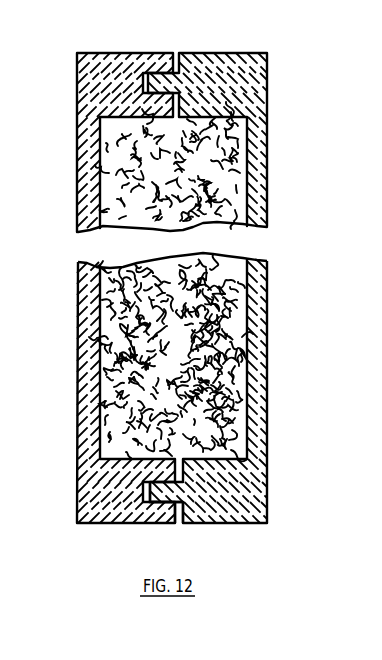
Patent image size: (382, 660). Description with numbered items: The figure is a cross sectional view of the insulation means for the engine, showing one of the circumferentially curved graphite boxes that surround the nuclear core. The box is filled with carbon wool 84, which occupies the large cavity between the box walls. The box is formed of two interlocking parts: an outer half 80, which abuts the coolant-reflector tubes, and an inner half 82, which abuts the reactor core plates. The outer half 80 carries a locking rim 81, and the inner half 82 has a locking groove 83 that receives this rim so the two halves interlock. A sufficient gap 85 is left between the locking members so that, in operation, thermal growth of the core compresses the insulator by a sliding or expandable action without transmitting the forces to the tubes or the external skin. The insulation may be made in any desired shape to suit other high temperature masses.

The outer half 80 is at (176, 404).
The locking rim 81 is at (182, 504).
The inner half 82 is at (78, 502).
The locking groove 83 is at (151, 501).
The carbon wool 84 is at (242, 326).
The gap 85 is at (178, 504).